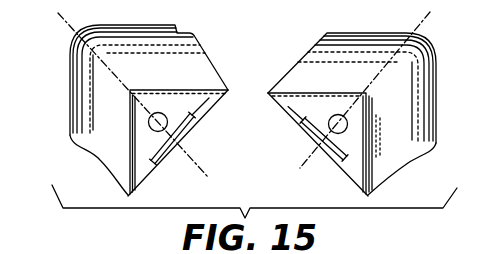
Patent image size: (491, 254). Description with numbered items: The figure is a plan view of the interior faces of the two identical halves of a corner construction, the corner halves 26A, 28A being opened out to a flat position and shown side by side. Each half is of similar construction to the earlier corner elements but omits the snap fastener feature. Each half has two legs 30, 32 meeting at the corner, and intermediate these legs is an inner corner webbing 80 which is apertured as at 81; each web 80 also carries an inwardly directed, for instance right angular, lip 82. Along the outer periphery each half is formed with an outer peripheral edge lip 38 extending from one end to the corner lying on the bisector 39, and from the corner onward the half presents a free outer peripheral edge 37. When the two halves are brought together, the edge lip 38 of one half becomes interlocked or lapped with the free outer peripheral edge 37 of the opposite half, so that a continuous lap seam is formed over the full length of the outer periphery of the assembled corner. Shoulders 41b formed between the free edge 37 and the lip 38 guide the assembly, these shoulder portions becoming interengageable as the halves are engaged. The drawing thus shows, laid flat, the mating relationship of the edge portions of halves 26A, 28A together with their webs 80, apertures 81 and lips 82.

The corner half 26A is at (407, 100).
The corner half 28A is at (93, 109).
The leg 30 is at (100, 142).
The leg 32 is at (190, 60).
The free outer peripheral edge 37 is at (72, 84).
The outer peripheral edge lip 38 is at (127, 25).
The bisector 39 is at (199, 158).
The shoulder 41b is at (80, 42).
The inner corner webbing 80 is at (203, 104).
The aperture 81 is at (156, 161).
The lip 82 is at (190, 131).